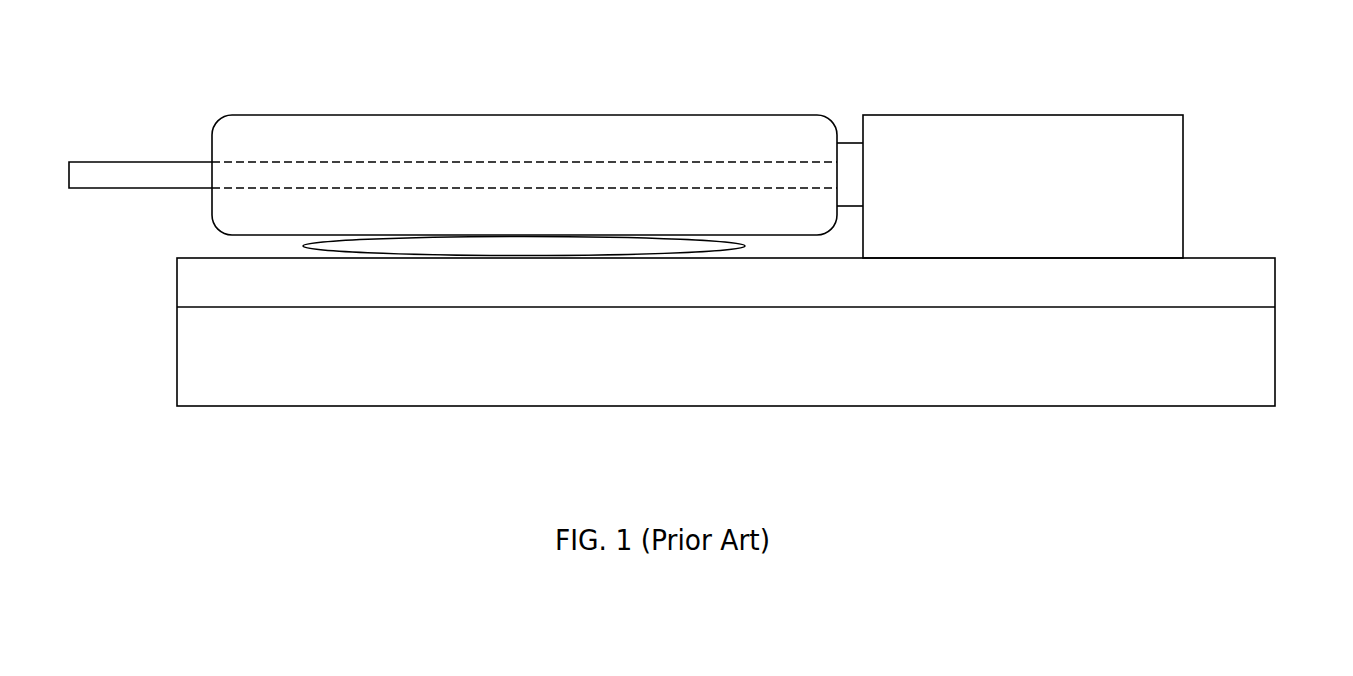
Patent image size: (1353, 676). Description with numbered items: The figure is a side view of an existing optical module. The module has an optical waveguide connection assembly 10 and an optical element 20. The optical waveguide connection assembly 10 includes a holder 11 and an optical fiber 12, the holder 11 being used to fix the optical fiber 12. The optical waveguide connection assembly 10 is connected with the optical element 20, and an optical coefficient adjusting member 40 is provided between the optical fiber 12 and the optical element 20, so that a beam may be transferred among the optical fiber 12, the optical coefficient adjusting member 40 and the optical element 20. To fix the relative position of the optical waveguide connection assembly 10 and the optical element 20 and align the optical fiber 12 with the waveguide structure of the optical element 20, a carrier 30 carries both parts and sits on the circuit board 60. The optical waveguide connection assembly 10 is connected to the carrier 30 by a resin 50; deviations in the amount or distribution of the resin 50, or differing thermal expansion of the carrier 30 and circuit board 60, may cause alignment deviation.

The optical waveguide connection assembly 10 is at (686, 132).
The holder 11 is at (497, 128).
The optical fiber 12 is at (130, 172).
The optical element 20 is at (1021, 127).
The carrier 30 is at (423, 285).
The optical coefficient adjusting member 40 is at (849, 193).
The resin 50 is at (535, 245).
The circuit board 60 is at (1268, 352).